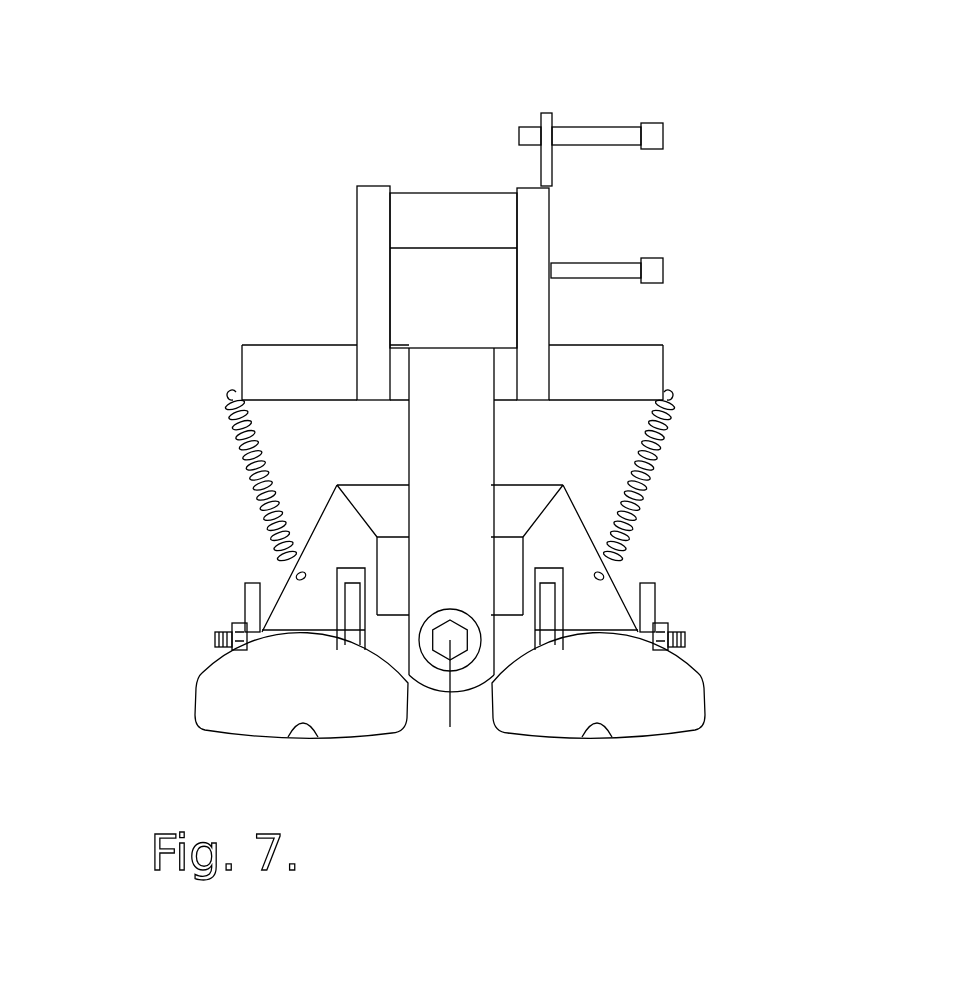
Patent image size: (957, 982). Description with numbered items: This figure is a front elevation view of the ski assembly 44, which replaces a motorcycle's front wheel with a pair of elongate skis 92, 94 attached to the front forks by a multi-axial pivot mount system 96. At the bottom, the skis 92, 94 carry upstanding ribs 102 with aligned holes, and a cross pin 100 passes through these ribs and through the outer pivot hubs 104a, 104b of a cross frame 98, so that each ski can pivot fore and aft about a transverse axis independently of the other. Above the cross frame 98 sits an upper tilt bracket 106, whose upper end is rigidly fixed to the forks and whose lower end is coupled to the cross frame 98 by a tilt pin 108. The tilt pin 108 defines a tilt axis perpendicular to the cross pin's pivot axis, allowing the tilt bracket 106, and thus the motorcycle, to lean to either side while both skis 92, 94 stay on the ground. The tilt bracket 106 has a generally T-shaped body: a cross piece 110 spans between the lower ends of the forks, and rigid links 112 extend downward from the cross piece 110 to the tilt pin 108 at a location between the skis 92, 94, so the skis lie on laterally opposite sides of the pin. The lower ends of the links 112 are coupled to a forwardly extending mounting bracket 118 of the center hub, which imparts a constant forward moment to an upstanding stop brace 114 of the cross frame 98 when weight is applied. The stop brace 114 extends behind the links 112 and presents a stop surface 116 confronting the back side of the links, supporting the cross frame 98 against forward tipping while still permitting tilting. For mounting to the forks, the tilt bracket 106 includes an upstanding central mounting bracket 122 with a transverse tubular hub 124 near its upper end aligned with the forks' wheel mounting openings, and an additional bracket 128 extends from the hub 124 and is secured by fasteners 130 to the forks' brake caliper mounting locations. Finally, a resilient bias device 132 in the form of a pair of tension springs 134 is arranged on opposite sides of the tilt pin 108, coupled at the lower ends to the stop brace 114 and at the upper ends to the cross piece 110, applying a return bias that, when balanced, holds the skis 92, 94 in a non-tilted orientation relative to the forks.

The ski assembly 44 is at (265, 102).
The multi-axial pivot mount system 96 is at (308, 253).
The upper tilt bracket 106 is at (242, 345).
The transverse tubular hub 124 is at (457, 215).
The upstanding central mounting bracket 122 is at (370, 217).
The additional bracket 128 is at (553, 113).
The fasteners 130 is at (663, 135).
The cross piece 110 is at (618, 373).
The rigid link 112 is at (455, 457).
The resilient bias device 132 is at (680, 437).
The tension springs 134 is at (255, 515).
The stop brace 114 is at (332, 527).
The stop surface 116 is at (390, 507).
The cross frame 98 is at (618, 582).
The outer pivot hub 104a is at (262, 630).
The outer pivot hub 104b is at (637, 633).
The upstanding ribs 102 is at (252, 590).
The cross pin 100 is at (683, 643).
The ski 92 is at (185, 702).
The ski 94 is at (720, 710).
The mounting bracket 118 is at (387, 645).
The tilt pin 108 is at (462, 648).